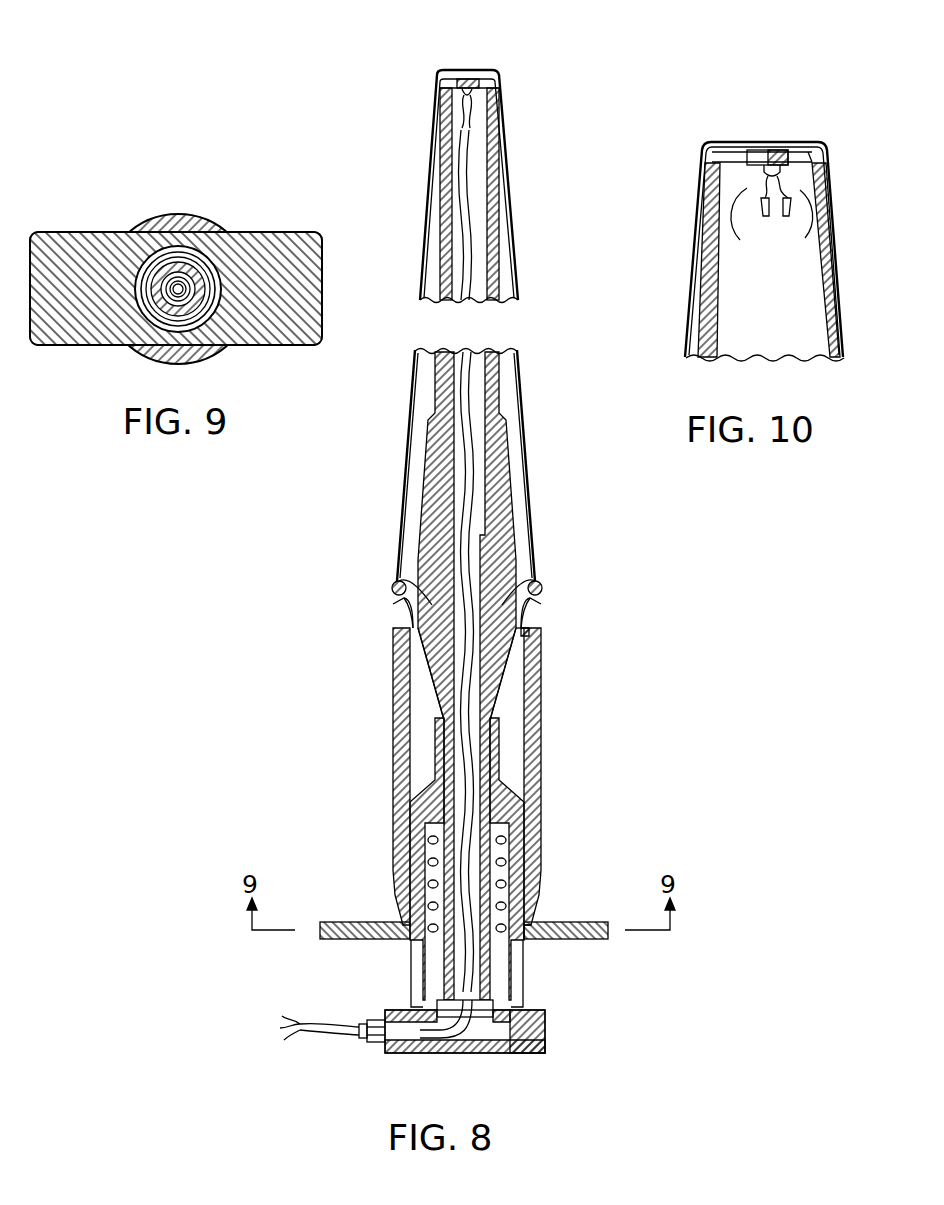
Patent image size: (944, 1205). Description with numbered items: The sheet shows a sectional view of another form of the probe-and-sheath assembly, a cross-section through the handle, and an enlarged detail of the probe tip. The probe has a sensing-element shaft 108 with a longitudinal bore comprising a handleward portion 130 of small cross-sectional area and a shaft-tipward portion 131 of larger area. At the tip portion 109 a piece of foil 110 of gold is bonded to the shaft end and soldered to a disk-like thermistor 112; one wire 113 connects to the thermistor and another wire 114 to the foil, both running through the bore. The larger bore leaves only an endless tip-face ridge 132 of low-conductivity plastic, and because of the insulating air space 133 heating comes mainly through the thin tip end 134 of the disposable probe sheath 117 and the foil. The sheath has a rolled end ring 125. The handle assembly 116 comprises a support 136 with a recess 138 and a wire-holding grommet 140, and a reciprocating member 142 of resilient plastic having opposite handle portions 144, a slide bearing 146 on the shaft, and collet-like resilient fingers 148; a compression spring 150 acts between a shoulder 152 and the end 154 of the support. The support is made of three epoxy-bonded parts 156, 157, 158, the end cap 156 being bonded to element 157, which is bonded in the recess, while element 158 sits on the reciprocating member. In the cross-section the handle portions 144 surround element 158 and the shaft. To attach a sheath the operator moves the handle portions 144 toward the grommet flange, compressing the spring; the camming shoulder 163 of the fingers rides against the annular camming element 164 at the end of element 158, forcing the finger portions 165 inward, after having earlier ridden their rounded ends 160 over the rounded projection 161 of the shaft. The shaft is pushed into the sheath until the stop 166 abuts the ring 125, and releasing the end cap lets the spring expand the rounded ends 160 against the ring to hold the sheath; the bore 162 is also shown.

In FIG. 8, the sensing-element shaft 108 is at (432, 467).
In FIG. 8, the tip portion 109 is at (437, 73).
In FIG. 8, the piece of foil 110 is at (462, 78).
In FIG. 10, the piece of foil 110 is at (758, 147).
In FIG. 8, the thermistor 112 is at (472, 78).
In FIG. 10, the thermistor 112 is at (808, 156).
In FIG. 8, the wire 113 is at (462, 96).
In FIG. 10, the wire 113 is at (738, 223).
In FIG. 8, the wire 114 is at (480, 101).
In FIG. 10, the wire 114 is at (797, 256).
In FIG. 8, the handle assembly 116 is at (404, 856).
In FIG. 8, the probe sheath 117 is at (407, 404).
In FIG. 8, the end enlargement or ring 125 is at (392, 590).
In FIG. 8, the handleward bore portion 130 is at (490, 556).
In FIG. 8, the shaft-tipward bore portion 131 is at (497, 393).
In FIG. 10, the tip-face ridge 132 is at (712, 221).
In FIG. 10, the insulating air space or clearance 133 is at (698, 320).
In FIG. 10, the thin tip end of the sheath 134 is at (735, 144).
In FIG. 8, the support 136 is at (547, 1031).
In FIG. 8, the recess or slot 138 is at (512, 999).
In FIG. 9, the recess or slot 138 is at (128, 231).
In FIG. 8, the grommet 140 is at (400, 1036).
In FIG. 8, the reciprocating member 142 is at (526, 944).
In FIG. 8, the handle portions 144 is at (338, 940).
In FIG. 9, the handle portions 144 is at (255, 232).
In FIG. 8, the slide bearing 146 is at (500, 742).
In FIG. 8, the resilient fingers 148 is at (503, 674).
In FIG. 8, the compression spring 150 is at (495, 883).
In FIG. 8, the shoulder 152 is at (408, 795).
In FIG. 8, the end of the support 154 is at (425, 975).
In FIG. 8, the end cap 156 is at (503, 1053).
In FIG. 8, the support element 157 is at (516, 999).
In FIG. 8, the support element 158 is at (532, 809).
In FIG. 9, the support element 158 is at (175, 214).
In FIG. 8, the rounded ends 160 is at (541, 588).
In FIG. 8, the rounded projection 161 is at (410, 623).
In FIG. 8, the bore 162 is at (410, 946).
In FIG. 8, the camming shoulder 163 is at (524, 612).
In FIG. 8, the annular ridge or camming element 164 is at (530, 641).
In FIG. 8, the finger portions 165 is at (393, 604).
In FIG. 8, the stop 166 is at (528, 633).